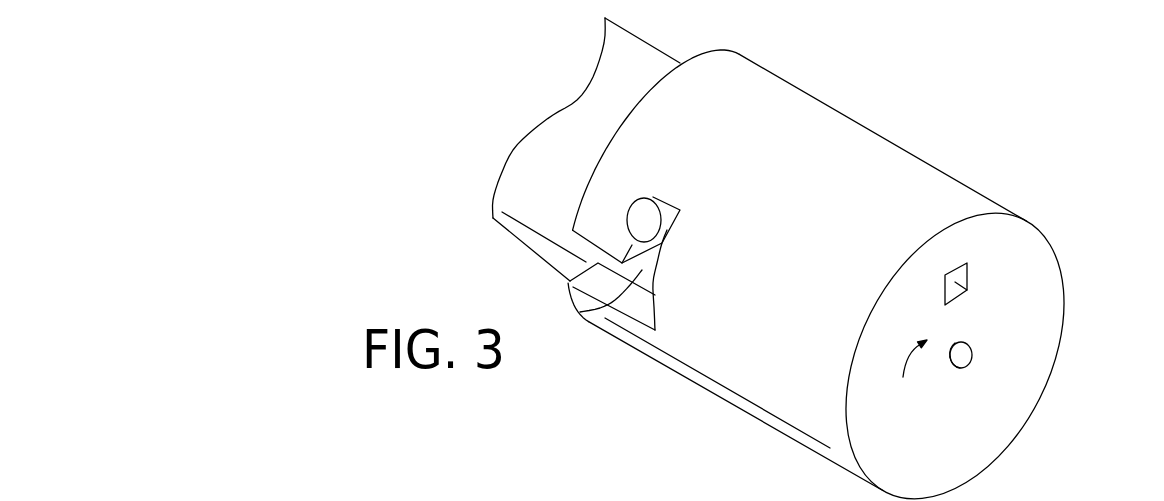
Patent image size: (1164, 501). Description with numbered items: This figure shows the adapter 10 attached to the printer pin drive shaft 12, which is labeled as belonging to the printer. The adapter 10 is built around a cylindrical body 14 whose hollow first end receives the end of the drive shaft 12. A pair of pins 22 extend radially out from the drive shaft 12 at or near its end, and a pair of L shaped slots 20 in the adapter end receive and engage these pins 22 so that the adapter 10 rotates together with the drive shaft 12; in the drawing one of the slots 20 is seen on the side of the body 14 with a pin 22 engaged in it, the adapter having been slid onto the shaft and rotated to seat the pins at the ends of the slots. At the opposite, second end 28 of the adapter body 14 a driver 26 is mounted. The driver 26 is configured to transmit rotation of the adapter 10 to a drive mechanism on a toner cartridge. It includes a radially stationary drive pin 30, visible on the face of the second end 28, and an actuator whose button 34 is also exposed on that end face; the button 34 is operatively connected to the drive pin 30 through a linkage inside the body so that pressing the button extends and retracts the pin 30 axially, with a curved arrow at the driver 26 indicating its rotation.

The adapter 10 is at (831, 271).
The printer pin drive shaft 12 is at (633, 53).
The cylindrical body 14 is at (808, 102).
The L shaped slots 20 is at (580, 312).
The pins 22 is at (647, 220).
The driver 26 is at (907, 374).
The second end 28 is at (1037, 275).
The drive pin 30 is at (968, 290).
The button 34 is at (972, 360).